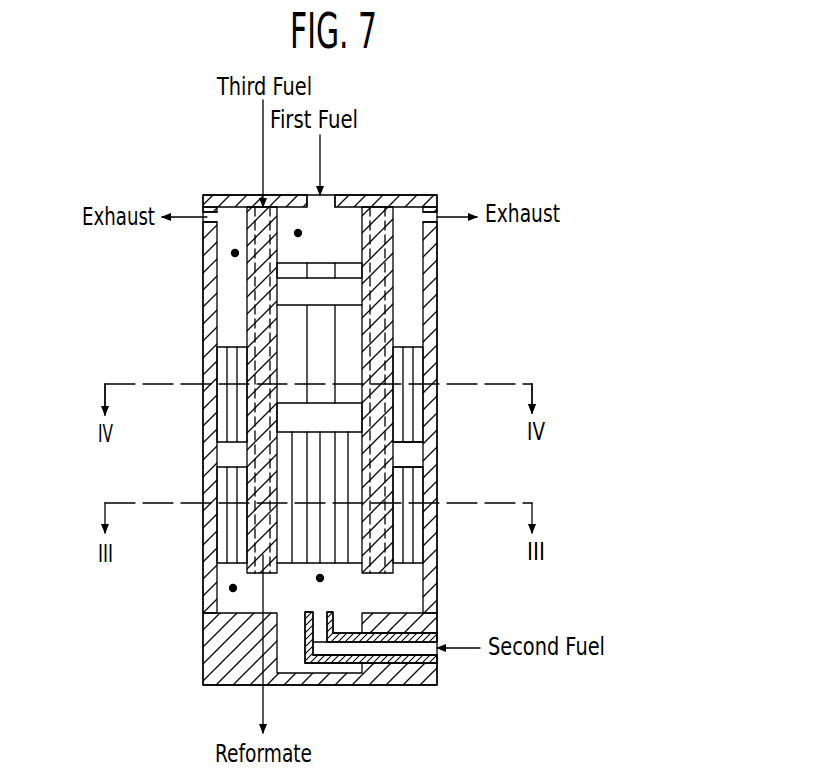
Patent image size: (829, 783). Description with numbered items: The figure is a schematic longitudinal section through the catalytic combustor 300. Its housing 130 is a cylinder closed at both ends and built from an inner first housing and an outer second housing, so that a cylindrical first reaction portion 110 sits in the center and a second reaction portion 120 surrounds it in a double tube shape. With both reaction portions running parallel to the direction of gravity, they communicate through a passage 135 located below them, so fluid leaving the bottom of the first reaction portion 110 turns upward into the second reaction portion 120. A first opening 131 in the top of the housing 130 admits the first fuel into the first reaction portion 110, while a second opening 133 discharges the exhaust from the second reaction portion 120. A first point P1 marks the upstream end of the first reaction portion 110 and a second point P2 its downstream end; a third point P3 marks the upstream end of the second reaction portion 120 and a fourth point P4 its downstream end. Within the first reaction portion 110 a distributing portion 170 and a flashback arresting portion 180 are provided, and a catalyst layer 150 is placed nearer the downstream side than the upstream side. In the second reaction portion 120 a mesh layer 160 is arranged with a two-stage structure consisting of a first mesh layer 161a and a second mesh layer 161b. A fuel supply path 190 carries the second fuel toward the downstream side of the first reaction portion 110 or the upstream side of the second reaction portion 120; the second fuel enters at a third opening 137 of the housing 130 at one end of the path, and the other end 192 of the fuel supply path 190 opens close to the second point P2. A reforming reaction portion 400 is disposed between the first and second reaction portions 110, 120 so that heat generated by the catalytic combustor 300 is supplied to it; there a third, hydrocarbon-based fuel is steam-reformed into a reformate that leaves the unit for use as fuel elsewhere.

The catalytic combustor 300 is at (173, 142).
The first reaction portion 110 is at (350, 225).
The second reaction portion 120 is at (413, 263).
The housing 130 is at (425, 192).
The first opening 131 is at (332, 193).
The second opening 133 is at (205, 222).
The passage 135 is at (378, 585).
The third opening 137 is at (430, 652).
The catalyst layer 150 is at (345, 457).
The mesh layer 160 is at (412, 365).
The first mesh layer 161a is at (220, 518).
The second mesh layer 161b is at (220, 408).
The distributing portion 170 is at (355, 327).
The flashback arresting portion 180 is at (262, 272).
The fuel supply path 190 is at (300, 636).
The other end of the fuel supply path 192 is at (333, 612).
The reforming reaction portion 400 is at (392, 452).
The first point P1 is at (298, 233).
The second point P2 is at (320, 578).
The third point P3 is at (233, 588).
The fourth point P4 is at (235, 253).